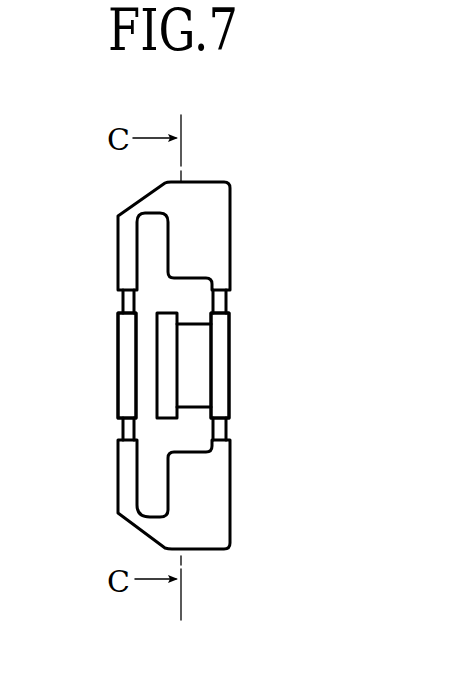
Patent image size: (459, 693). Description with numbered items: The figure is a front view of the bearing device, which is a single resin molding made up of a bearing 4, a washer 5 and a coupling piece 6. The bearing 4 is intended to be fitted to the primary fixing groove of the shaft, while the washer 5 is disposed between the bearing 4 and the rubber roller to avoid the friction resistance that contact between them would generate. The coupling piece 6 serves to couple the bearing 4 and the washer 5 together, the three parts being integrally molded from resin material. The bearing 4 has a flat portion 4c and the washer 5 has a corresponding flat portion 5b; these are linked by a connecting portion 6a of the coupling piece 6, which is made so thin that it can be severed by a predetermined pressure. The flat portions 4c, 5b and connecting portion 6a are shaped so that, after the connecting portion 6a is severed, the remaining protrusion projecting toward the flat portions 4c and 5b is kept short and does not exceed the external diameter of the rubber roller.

The bearing 4 is at (232, 368).
The flat portion 4c is at (230, 305).
The washer 5 is at (125, 383).
The flat portion 5b is at (121, 307).
The coupling piece 6 is at (230, 213).
The connecting portion 6a is at (124, 296).